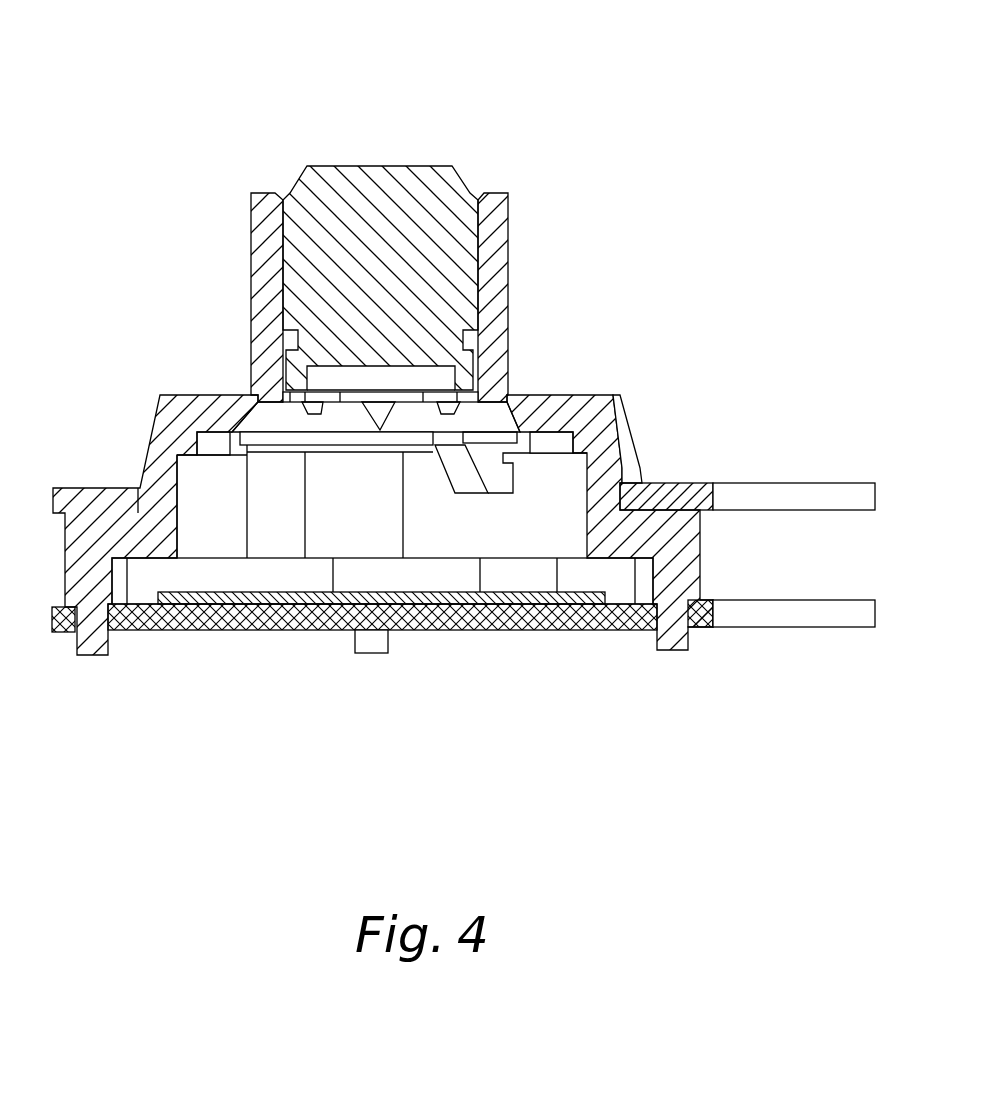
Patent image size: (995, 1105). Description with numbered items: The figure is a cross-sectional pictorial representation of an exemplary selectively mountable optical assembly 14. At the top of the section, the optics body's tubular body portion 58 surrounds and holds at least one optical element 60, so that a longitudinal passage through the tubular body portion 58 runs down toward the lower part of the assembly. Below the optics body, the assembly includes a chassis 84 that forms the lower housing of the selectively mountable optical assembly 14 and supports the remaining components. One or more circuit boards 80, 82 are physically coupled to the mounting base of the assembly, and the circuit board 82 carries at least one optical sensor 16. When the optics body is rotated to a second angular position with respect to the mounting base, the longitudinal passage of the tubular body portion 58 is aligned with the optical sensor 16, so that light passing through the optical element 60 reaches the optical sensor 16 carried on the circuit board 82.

The selectively mountable optical assembly 14 is at (738, 42).
The optical element 60 is at (402, 160).
The tubular body portion 58 is at (250, 242).
The chassis 84 is at (150, 456).
The circuit board 80 is at (790, 483).
The circuit board 82 is at (793, 600).
The optical sensor 16 is at (237, 607).